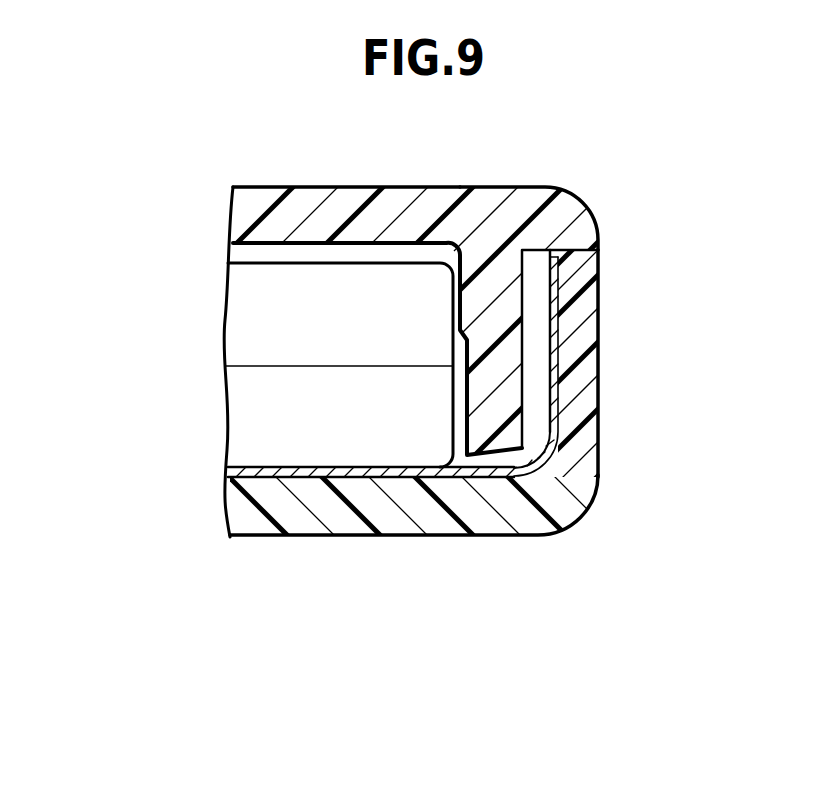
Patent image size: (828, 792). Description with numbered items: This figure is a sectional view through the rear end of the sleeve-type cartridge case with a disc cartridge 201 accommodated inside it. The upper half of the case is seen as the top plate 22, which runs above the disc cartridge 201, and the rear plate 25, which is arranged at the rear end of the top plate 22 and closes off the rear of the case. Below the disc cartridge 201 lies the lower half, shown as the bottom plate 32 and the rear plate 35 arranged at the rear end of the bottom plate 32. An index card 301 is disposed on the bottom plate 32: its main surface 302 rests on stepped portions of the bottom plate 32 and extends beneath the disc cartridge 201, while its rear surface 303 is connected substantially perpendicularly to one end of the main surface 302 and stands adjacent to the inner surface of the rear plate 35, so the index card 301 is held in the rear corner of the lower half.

The top plate 22 is at (344, 206).
The rear plate 25 is at (500, 317).
The rear plate 35 is at (582, 348).
The bottom plate 32 is at (348, 520).
The disc cartridge 201 is at (208, 340).
The index card 301 is at (417, 457).
The main surface 302 is at (482, 480).
The rear surface 303 is at (540, 474).